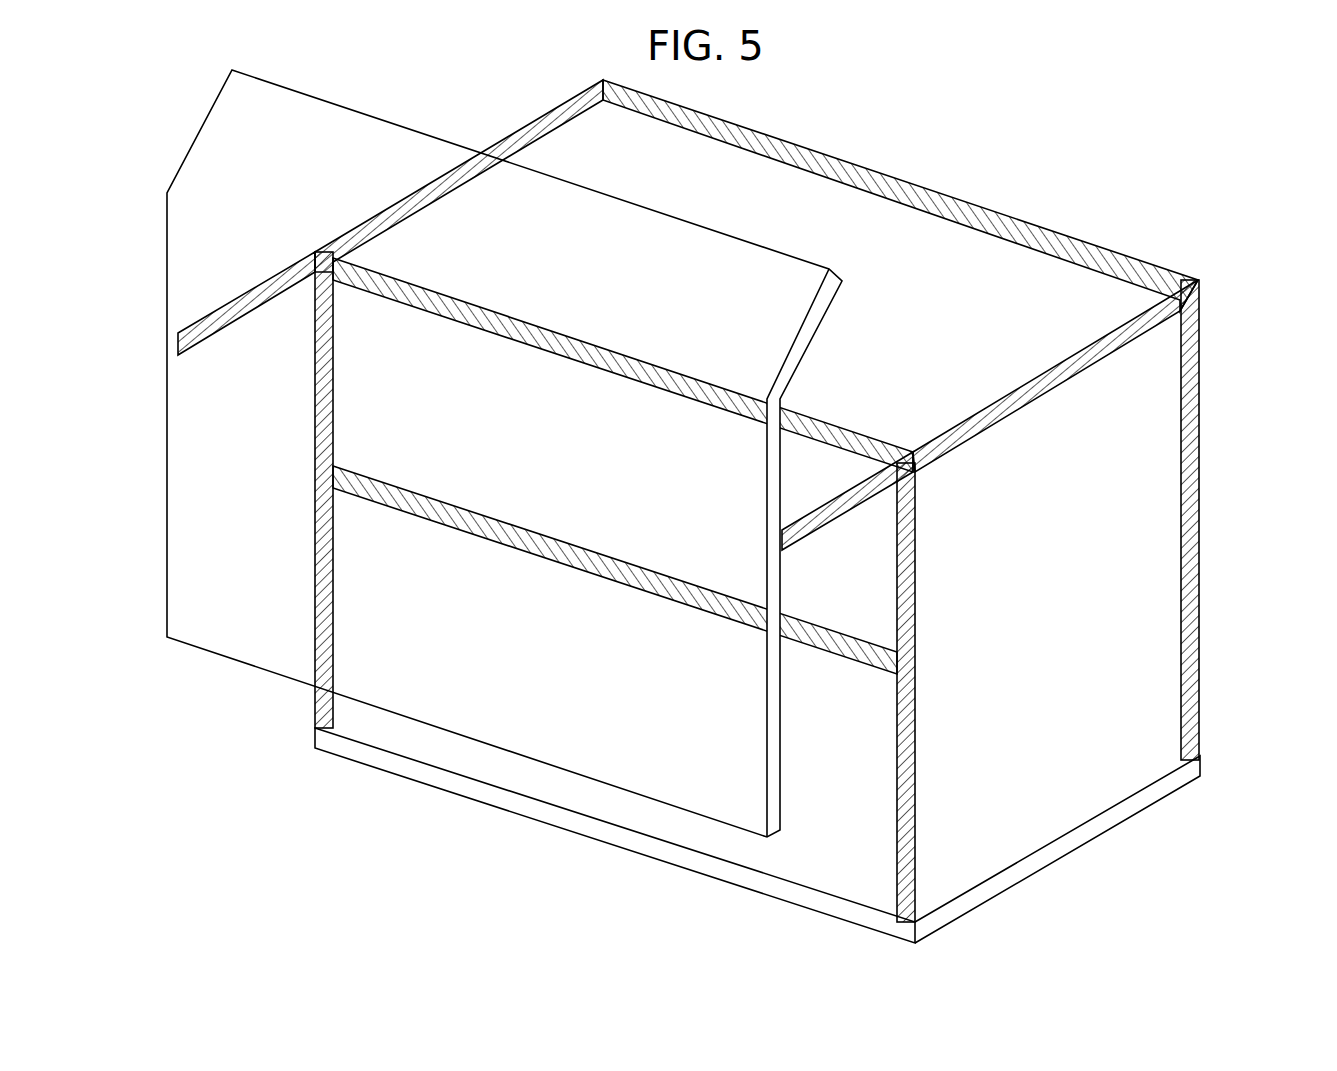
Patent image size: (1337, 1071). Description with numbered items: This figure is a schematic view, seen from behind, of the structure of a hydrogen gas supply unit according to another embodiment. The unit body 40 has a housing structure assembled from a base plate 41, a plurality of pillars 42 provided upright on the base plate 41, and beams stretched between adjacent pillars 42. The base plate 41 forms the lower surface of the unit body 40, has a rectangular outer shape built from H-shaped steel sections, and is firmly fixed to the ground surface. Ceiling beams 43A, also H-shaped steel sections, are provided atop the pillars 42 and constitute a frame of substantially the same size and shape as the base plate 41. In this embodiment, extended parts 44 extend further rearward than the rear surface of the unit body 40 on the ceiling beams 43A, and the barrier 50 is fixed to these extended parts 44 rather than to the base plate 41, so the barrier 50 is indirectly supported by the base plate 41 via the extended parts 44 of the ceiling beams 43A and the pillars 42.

The unit body 40 is at (749, 506).
The base plate 41 is at (772, 885).
The pillar 42 is at (333, 549).
The ceiling beam 43A is at (533, 123).
The extended part 44 is at (236, 322).
The barrier 50 is at (228, 133).